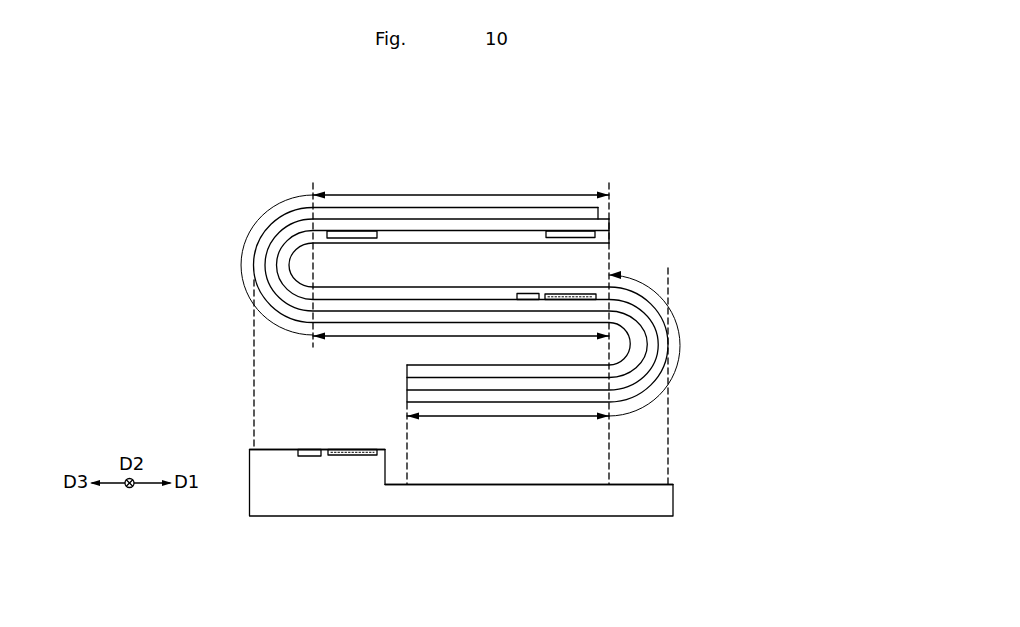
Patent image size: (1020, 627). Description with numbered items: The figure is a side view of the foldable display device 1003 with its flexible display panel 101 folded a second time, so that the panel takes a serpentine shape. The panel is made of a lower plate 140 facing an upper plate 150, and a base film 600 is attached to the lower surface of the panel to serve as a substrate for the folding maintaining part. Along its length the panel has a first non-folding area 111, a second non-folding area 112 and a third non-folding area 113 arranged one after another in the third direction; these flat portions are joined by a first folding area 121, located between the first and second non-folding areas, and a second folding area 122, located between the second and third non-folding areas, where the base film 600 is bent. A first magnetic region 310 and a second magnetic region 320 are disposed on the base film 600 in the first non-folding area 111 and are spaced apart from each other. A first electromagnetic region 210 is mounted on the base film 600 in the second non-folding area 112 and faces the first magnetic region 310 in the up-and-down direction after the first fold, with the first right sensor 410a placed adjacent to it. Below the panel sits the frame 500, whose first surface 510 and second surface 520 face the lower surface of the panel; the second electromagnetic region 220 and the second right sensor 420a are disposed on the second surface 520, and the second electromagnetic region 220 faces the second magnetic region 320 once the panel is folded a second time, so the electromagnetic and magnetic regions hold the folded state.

The foldable display device 1003 is at (687, 122).
The flexible display panel 101 is at (666, 236).
The first non-folding area 111 is at (461, 184).
The second non-folding area 112 is at (461, 346).
The third non-folding area 113 is at (508, 443).
The first folding area 121 is at (259, 316).
The second folding area 122 is at (680, 343).
The base film 600 is at (260, 248).
The lower plate 140 is at (280, 240).
The upper plate 150 is at (298, 237).
The second magnetic region 320 is at (350, 237).
The first magnetic region 310 is at (572, 233).
The first right sensor 410a is at (527, 293).
The first electromagnetic region 210 is at (568, 293).
The second right sensor 420a is at (310, 451).
The second electromagnetic region 220 is at (355, 451).
The frame 500 is at (664, 500).
The first surface 510 is at (508, 485).
The second surface 520 is at (288, 444).